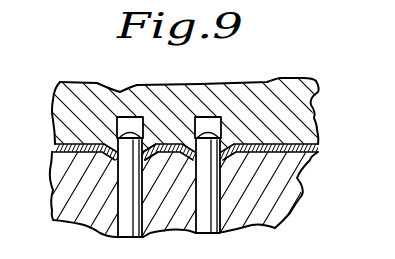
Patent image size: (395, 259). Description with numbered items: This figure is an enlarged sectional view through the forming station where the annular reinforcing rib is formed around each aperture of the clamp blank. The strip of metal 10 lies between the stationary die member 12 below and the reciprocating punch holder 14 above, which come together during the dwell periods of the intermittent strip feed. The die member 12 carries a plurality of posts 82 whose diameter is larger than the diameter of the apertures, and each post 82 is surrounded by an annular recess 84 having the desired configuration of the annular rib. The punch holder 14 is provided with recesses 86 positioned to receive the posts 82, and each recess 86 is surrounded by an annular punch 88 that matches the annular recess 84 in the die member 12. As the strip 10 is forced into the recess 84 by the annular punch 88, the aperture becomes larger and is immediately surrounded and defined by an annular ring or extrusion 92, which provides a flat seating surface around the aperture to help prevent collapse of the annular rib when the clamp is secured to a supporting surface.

The strip of metal 10 is at (313, 129).
The die member 12 is at (291, 212).
The punch holder 14 is at (300, 83).
The post 82 is at (122, 215).
The annular recess 84 is at (113, 153).
The recess 86 is at (128, 118).
The annular punch 88 is at (114, 145).
The annular ring or extrusion 92 is at (152, 141).